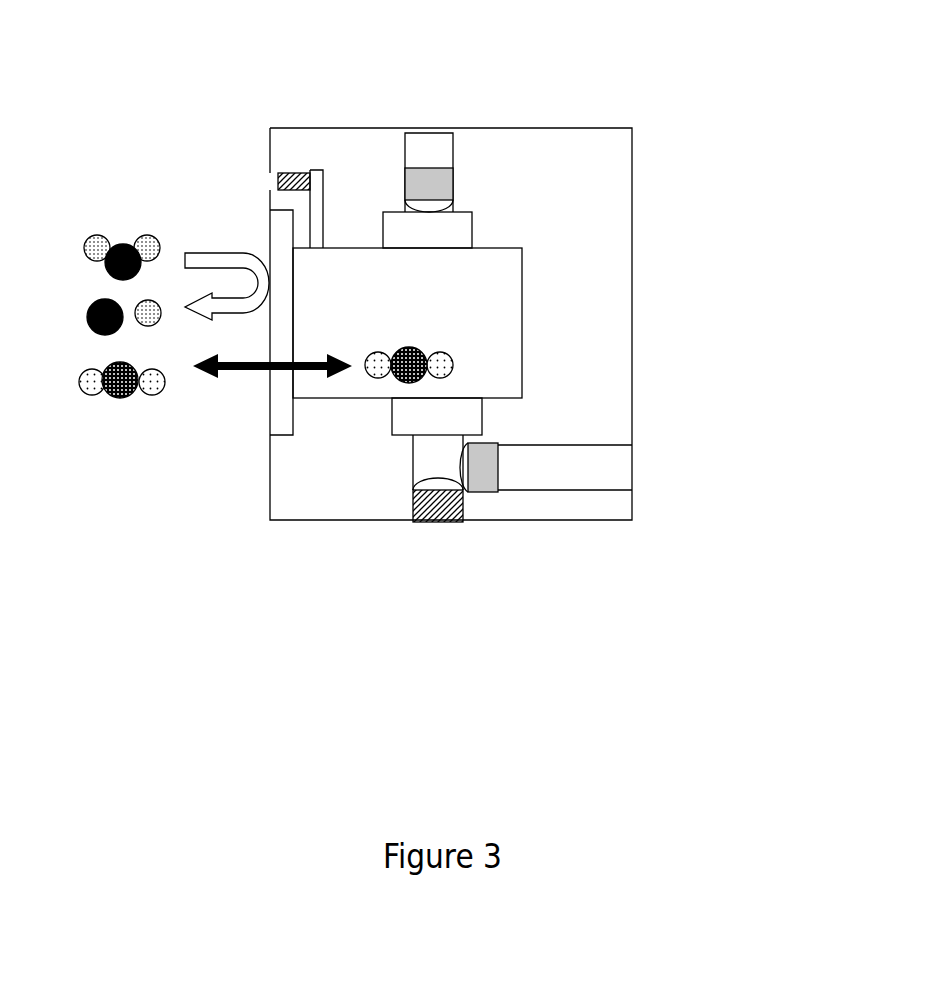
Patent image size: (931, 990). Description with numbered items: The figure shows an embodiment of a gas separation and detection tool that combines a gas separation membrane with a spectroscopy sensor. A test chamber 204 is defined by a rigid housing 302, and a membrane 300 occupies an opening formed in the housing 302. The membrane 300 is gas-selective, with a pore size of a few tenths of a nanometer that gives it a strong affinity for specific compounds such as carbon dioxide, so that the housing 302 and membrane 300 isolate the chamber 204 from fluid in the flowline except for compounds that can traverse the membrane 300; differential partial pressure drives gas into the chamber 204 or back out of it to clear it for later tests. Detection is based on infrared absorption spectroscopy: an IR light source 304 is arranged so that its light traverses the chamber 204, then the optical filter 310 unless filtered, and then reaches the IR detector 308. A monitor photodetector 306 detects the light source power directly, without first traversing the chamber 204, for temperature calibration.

The test chamber 204 is at (437, 308).
The membrane 300 is at (282, 253).
The rigid housing 302 is at (613, 280).
The infrared light source 304 is at (440, 518).
The monitor photodetector 306 is at (509, 501).
The IR detector 308 is at (437, 172).
The optical filter 310 is at (350, 157).